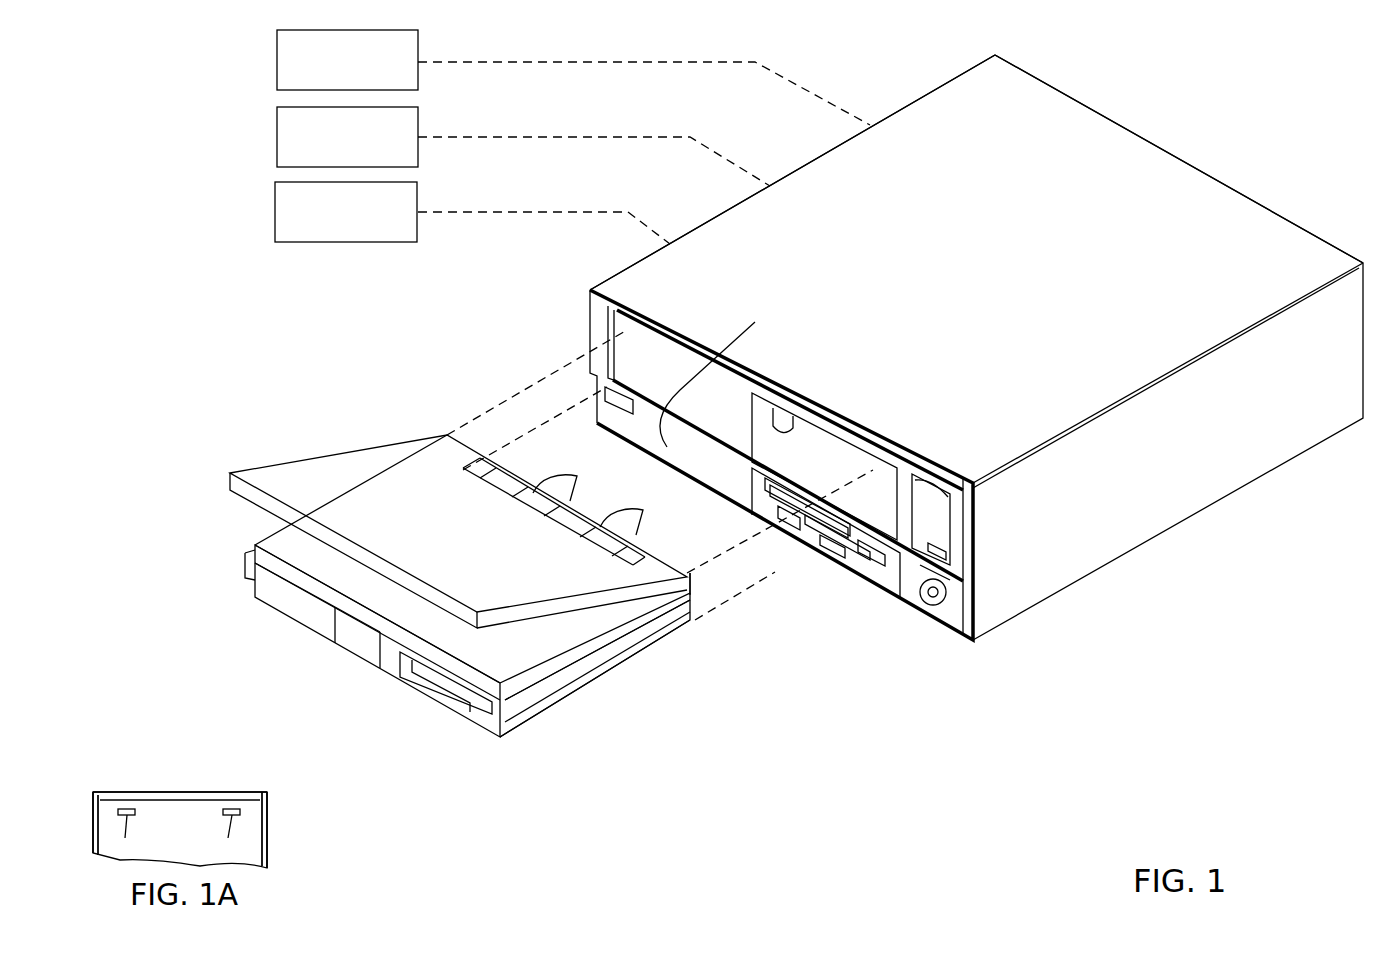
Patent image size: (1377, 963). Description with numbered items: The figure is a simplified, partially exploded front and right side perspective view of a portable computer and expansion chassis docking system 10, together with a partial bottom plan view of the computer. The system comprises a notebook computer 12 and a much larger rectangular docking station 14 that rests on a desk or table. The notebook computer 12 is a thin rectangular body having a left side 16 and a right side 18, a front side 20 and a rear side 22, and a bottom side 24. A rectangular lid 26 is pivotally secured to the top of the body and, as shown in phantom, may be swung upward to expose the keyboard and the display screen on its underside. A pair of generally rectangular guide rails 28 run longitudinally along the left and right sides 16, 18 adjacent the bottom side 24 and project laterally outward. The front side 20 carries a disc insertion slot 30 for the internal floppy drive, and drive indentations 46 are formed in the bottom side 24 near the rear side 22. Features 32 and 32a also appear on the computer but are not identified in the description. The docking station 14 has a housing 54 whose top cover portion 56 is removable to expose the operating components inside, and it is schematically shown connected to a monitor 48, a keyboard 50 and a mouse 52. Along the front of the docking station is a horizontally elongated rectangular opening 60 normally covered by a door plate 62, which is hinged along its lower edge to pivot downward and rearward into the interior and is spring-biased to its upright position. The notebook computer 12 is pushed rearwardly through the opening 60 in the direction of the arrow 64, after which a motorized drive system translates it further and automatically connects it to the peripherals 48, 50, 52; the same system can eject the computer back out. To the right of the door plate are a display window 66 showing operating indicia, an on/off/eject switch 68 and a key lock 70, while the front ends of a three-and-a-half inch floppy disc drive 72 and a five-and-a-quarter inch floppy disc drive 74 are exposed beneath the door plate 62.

In FIG. 1, the portable computer/expansion chassis docking system 10 is at (830, 680).
In FIG. 1, the notebook computer 12 is at (278, 623).
In FIG. 1A, the notebook computer 12 is at (145, 740).
In FIG. 1, the docking station 14 is at (1243, 550).
In FIG. 1, the left side 16 is at (252, 565).
In FIG. 1A, the left side 16 is at (268, 850).
In FIG. 1, the right side 18 is at (523, 720).
In FIG. 1A, the right side 18 is at (93, 828).
In FIG. 1, the front side 20 is at (272, 588).
In FIG. 1, the rear side 22 is at (687, 575).
In FIG. 1A, the rear side 22 is at (187, 792).
In FIG. 1, the bottom side 24 is at (318, 636).
In FIG. 1A, the bottom side 24 is at (190, 838).
In FIG. 1, the lid 26 is at (278, 465).
In FIG. 1, the guide rails 28 is at (597, 663).
In FIG. 1A, the guide rails 28 is at (93, 800).
In FIG. 1, the disc insertion slot 30 is at (465, 697).
In FIG. 1, the guide rail 32 is at (730, 417).
In FIG. 1, the guide tabs 32a is at (520, 476).
In FIG. 1A, the drive indentations 46 is at (169, 833).
In FIG. 1, the monitor 48 is at (277, 48).
In FIG. 1, the keyboard 50 is at (277, 122).
In FIG. 1, the mouse 52 is at (277, 198).
In FIG. 1, the housing 54 is at (942, 75).
In FIG. 1, the top cover portion 56 is at (1128, 175).
In FIG. 1, the rectangular opening 60 is at (778, 405).
In FIG. 1, the door plate 62 is at (833, 467).
In FIG. 1, the arrow 64 is at (718, 368).
In FIG. 1, the display window 66 is at (925, 507).
In FIG. 1, the on/off/eject switch 68 is at (930, 575).
In FIG. 1, the key lock 70 is at (940, 610).
In FIG. 1, the 3.5 inch floppy disc drive 72 is at (773, 467).
In FIG. 1, the 5.25 inch floppy disc drive 74 is at (887, 573).